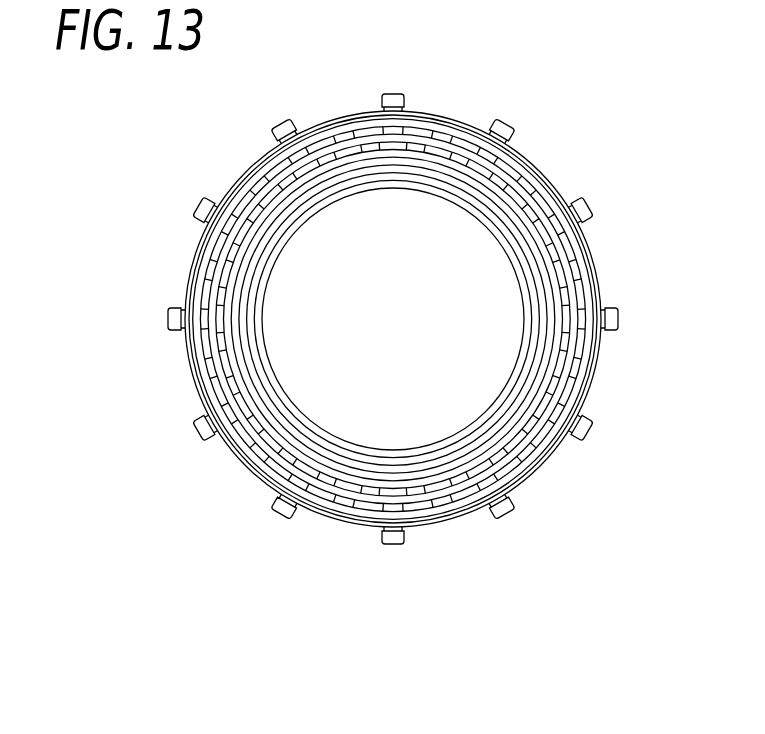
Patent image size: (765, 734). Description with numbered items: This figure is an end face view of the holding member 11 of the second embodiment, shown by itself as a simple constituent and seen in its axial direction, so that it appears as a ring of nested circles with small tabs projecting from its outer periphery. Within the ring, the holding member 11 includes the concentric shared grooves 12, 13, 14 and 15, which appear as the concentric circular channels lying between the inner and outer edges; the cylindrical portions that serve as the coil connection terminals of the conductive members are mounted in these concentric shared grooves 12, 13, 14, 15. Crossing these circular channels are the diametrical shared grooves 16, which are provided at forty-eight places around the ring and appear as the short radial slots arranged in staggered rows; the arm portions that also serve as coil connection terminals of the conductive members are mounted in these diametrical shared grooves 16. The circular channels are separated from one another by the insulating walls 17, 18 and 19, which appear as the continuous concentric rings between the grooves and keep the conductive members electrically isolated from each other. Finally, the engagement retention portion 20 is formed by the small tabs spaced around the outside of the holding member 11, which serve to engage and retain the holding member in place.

The holding member 11 is at (590, 238).
The concentric shared groove 12 is at (597, 347).
The concentric shared groove 13 is at (537, 450).
The concentric shared groove 14 is at (557, 318).
The concentric shared groove 15 is at (492, 428).
The diametrical shared groove 16 is at (468, 133).
The insulating wall 17 is at (255, 463).
The insulating wall 18 is at (273, 440).
The insulating wall 19 is at (357, 465).
The engagement retention portion 20 is at (513, 512).